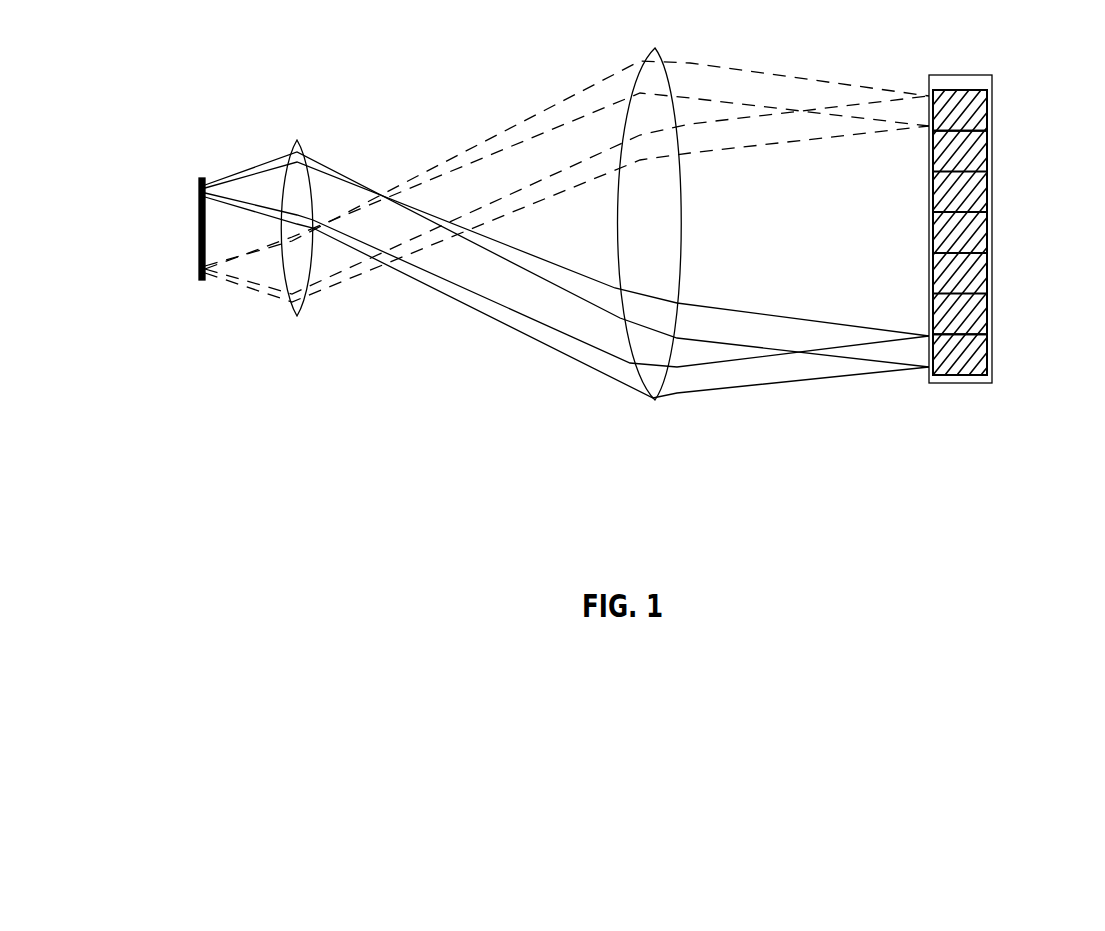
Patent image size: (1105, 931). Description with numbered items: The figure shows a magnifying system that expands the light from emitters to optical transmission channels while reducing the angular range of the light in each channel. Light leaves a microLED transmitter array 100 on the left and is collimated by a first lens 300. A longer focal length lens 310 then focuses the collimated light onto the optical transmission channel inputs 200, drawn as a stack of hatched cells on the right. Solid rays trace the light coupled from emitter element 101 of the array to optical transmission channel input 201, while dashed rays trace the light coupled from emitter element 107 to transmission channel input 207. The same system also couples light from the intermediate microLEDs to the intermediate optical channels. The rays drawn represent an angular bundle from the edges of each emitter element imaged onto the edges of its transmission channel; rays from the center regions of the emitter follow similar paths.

The microLED transmitter array 100 is at (199, 216).
The emitter element 101 is at (200, 188).
The emitter element 107 is at (199, 268).
The first lens 300 is at (305, 255).
The longer focal length lens 310 is at (650, 250).
The optical transmission channel inputs 200 is at (992, 103).
The transmission channel input 207 is at (992, 128).
The optical transmission channel input 201 is at (992, 348).